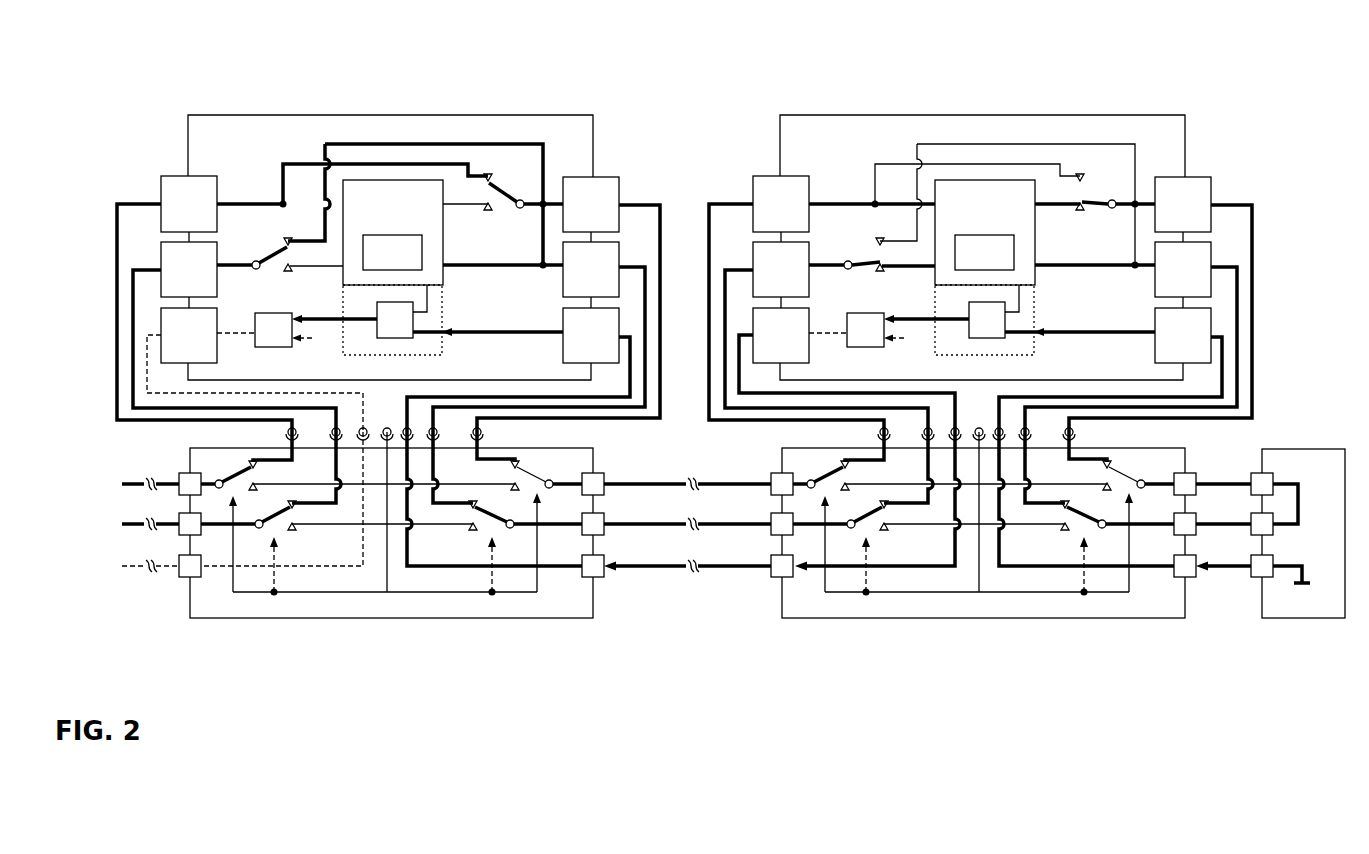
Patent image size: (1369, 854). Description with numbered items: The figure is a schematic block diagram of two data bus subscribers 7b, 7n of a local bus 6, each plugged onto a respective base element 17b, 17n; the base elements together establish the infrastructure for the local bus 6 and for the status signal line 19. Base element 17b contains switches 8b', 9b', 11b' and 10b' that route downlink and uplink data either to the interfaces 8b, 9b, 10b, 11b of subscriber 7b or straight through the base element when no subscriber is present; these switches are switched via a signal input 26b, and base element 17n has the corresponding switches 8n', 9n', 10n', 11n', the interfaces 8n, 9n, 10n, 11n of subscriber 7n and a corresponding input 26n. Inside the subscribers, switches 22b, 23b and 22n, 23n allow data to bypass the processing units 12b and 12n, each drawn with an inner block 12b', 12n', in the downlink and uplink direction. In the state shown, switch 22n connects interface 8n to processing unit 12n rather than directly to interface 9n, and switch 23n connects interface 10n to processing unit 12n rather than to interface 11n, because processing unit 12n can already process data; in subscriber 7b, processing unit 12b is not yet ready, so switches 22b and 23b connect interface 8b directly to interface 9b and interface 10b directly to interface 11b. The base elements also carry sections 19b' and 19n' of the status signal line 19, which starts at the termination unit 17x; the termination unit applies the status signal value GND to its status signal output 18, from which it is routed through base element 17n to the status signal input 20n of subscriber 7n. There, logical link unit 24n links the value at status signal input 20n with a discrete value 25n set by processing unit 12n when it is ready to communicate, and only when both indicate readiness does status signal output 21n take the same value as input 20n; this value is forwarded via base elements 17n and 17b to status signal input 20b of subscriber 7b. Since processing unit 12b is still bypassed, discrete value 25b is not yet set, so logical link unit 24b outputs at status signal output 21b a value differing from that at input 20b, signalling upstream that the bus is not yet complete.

The local bus 6 is at (687, 504).
The data bus subscriber 7b is at (392, 115).
The data bus subscriber 7n is at (984, 115).
The interface 8b is at (302, 298).
The interface 8n is at (894, 298).
The interface 9b is at (568, 304).
The interface 9n is at (1160, 304).
The interface 10b is at (539, 337).
The interface 10n is at (1131, 337).
The interface 11b is at (234, 337).
The interface 11n is at (826, 337).
The processing unit 12b is at (389, 267).
The processing unit 12n is at (981, 267).
The memory b 12b' is at (392, 252).
The memory n 12n' is at (984, 252).
The base element 17b is at (393, 618).
The base element 17n is at (985, 618).
The termination unit 17x is at (1300, 460).
The status signal output 18 is at (1258, 587).
The status signal line 19 is at (687, 583).
The status signal input 20b is at (518, 370).
The status signal input 20n is at (1110, 370).
The status signal output 21b is at (255, 370).
The status signal output 21n is at (847, 370).
The switch 22b is at (505, 213).
The switch 22n is at (1097, 213).
The switch 23b is at (265, 255).
The switch 23n is at (857, 255).
The logical link unit 24b is at (272, 348).
The logical link unit 24n is at (864, 348).
The discrete value 25b is at (318, 338).
The discrete value 25n is at (910, 338).
The input 26b is at (387, 426).
The connector n 26n is at (979, 426).
The switch 8b' is at (245, 475).
The switch 9b' is at (533, 475).
The switch 10b' is at (509, 515).
The switch 11b' is at (268, 515).
The section of signal line 19b' is at (385, 544).
The switch 8n' is at (837, 475).
The switch 9n' is at (1125, 475).
The switch 10n' is at (1101, 515).
The switch 11n' is at (860, 515).
The section of signal line 19n' is at (977, 544).